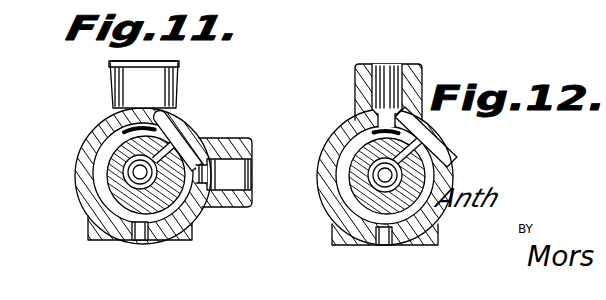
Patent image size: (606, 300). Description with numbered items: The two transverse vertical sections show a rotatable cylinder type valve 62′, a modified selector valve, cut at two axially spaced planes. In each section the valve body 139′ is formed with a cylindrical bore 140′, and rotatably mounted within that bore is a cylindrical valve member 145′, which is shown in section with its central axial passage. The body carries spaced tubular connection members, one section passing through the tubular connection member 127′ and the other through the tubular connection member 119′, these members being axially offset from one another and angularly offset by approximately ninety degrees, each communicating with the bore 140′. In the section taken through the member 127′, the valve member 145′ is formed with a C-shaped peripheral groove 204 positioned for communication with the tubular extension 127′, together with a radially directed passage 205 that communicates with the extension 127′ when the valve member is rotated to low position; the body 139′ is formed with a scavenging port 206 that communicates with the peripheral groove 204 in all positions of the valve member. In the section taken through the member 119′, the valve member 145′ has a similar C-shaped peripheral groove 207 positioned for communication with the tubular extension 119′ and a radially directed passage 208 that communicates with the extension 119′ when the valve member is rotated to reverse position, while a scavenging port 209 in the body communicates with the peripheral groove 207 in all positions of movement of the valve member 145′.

In FIG. 11, the rotatable cylinder type valve 62′ is at (91, 127).
In FIG. 12, the rotatable cylinder type valve 62′ is at (340, 126).
In FIG. 11, the tubular connection member 119′ is at (178, 85).
In FIG. 12, the tubular connection member 119′ is at (355, 80).
In FIG. 11, the tubular connection member 127′ is at (221, 138).
In FIG. 11, the valve body 139′ is at (88, 208).
In FIG. 12, the valve body 139′ is at (325, 207).
In FIG. 11, the cylindrical bore 140′ is at (96, 160).
In FIG. 12, the cylindrical bore 140′ is at (342, 157).
In FIG. 11, the cylindrical valve member 145′ is at (163, 198).
In FIG. 12, the cylindrical valve member 145′ is at (408, 202).
In FIG. 11, the C-shaped peripheral groove 204 is at (116, 222).
In FIG. 11, the radially directed passage 205 is at (183, 118).
In FIG. 11, the scavenging port 206 is at (142, 240).
In FIG. 12, the C-shaped peripheral groove 207 is at (360, 217).
In FIG. 12, the radially directed passage 208 is at (412, 140).
In FIG. 12, the scavenging port 209 is at (380, 233).